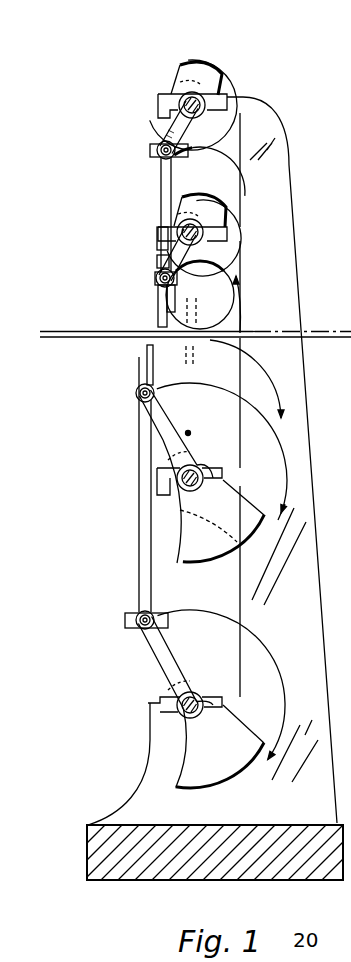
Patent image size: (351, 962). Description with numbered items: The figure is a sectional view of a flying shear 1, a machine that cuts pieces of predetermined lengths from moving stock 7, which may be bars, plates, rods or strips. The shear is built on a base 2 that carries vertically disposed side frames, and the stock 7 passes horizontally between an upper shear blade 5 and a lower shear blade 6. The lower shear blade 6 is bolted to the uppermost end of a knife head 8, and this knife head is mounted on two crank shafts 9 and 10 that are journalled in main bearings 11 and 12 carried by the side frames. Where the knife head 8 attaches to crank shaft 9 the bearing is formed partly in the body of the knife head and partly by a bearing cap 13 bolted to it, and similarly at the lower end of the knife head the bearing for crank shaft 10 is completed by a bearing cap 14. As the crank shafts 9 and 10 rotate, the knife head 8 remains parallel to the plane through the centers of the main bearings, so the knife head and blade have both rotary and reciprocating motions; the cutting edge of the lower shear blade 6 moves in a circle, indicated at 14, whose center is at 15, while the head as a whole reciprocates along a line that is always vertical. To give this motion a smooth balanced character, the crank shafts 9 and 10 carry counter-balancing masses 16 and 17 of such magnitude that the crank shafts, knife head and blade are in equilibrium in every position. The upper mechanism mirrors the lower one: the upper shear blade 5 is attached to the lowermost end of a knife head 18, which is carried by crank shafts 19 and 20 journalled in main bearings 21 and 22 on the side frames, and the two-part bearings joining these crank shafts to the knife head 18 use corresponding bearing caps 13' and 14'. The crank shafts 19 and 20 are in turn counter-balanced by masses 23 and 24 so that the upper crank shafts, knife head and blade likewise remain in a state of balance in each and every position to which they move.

The flying shear 1 is at (209, 41).
The base 2 is at (88, 855).
The upper shear blade 5 is at (158, 314).
The lower shear blade 6 is at (147, 350).
The stock 7 is at (53, 331).
The knife head 8 is at (139, 513).
The crank shaft 9 is at (168, 443).
The crank shaft 10 is at (167, 665).
The main bearing 11 is at (205, 466).
The main bearing 12 is at (202, 690).
The bearing cap 13 is at (177, 381).
The bearing cap 13' is at (179, 297).
The bearing cap 14 is at (186, 499).
The bearing cap 14' is at (143, 150).
The center 15 is at (189, 433).
The counter-balancing mass 16 is at (260, 532).
The counter-balancing mass 17 is at (226, 783).
The knife head 18 is at (161, 196).
The crank shaft 19 is at (170, 125).
The crank shaft 20 is at (178, 270).
The main bearing 21 is at (158, 102).
The main bearing 22 is at (157, 242).
The counter-balancing mass 23 is at (198, 63).
The counter-balancing mass 24 is at (203, 203).